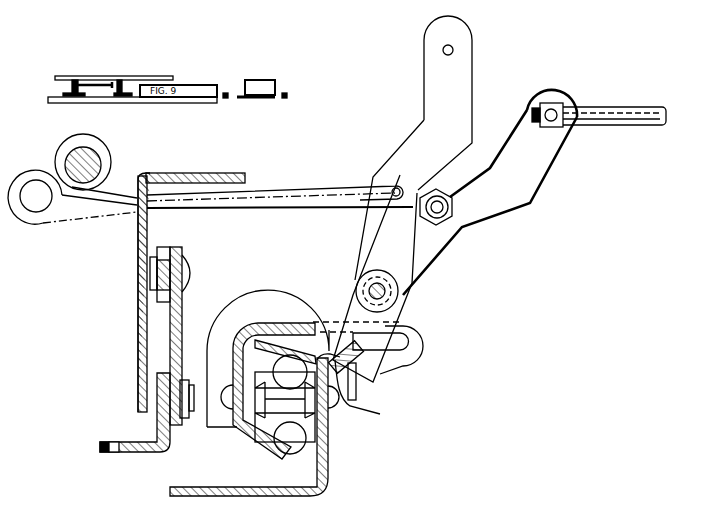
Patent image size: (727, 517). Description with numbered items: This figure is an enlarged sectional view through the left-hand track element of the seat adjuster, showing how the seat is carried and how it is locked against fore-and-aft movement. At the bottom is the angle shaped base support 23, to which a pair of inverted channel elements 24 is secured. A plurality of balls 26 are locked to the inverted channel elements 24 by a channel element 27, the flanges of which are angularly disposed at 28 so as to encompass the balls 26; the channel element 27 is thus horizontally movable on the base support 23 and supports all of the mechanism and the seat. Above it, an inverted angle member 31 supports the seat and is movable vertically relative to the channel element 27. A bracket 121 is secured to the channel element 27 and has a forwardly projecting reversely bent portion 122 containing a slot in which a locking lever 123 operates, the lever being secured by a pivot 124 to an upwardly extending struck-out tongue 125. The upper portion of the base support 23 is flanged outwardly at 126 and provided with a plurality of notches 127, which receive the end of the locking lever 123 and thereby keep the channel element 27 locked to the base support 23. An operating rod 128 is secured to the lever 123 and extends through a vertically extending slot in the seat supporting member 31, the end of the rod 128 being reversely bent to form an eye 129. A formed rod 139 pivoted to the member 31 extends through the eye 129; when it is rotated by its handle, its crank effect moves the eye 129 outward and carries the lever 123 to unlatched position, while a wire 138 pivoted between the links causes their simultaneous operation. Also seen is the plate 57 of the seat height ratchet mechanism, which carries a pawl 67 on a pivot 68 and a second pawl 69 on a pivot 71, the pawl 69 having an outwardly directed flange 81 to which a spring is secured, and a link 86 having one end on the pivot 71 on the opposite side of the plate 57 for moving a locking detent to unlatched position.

The formed rod 139 is at (34, 186).
The eye 129 is at (100, 162).
The inverted angle member 31 is at (240, 174).
The operating rod 128 is at (284, 192).
The locking lever 123 is at (452, 82).
The struck-out tongue 125 is at (527, 190).
The wire 138 is at (625, 107).
The pivot 124 is at (358, 283).
The reversely bent portion 122 is at (420, 343).
The notches 127 is at (372, 383).
The bracket 121 is at (245, 305).
The channel element 27 is at (246, 440).
The angularly disposed flanges 28 is at (278, 461).
The balls 26 is at (305, 438).
The inverted channel elements 24 is at (313, 428).
The angle shaped base support 23 is at (325, 468).
The outwardly flanged upper portion 126 is at (377, 395).
The pawl 67 is at (163, 250).
The pivot 68 is at (190, 262).
The pivot 71 is at (186, 372).
The pawl 69 is at (160, 432).
The link 86 is at (178, 455).
The outwardly directed flange 81 is at (99, 448).
The plate 57 is at (137, 322).